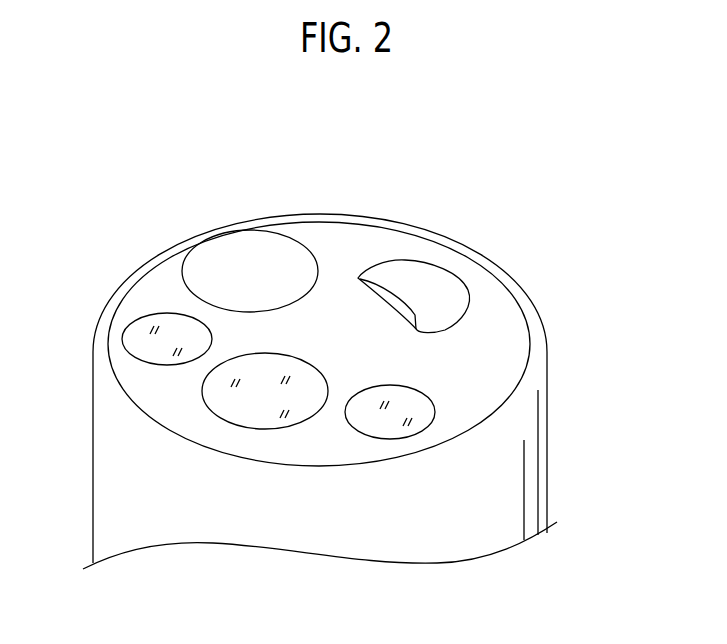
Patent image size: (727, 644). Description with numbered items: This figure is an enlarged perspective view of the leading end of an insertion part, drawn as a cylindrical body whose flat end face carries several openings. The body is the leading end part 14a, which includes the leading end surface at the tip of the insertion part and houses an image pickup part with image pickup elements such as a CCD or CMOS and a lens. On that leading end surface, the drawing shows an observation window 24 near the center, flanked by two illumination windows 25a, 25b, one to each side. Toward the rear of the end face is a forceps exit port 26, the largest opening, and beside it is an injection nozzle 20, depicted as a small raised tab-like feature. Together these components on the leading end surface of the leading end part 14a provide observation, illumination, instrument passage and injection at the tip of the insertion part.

The leading end part 14a is at (560, 373).
The injection nozzle 20 is at (422, 285).
The observation window 24 is at (243, 413).
The illumination window 25a is at (375, 423).
The illumination window 25b is at (133, 358).
The forceps exit port 26 is at (230, 255).